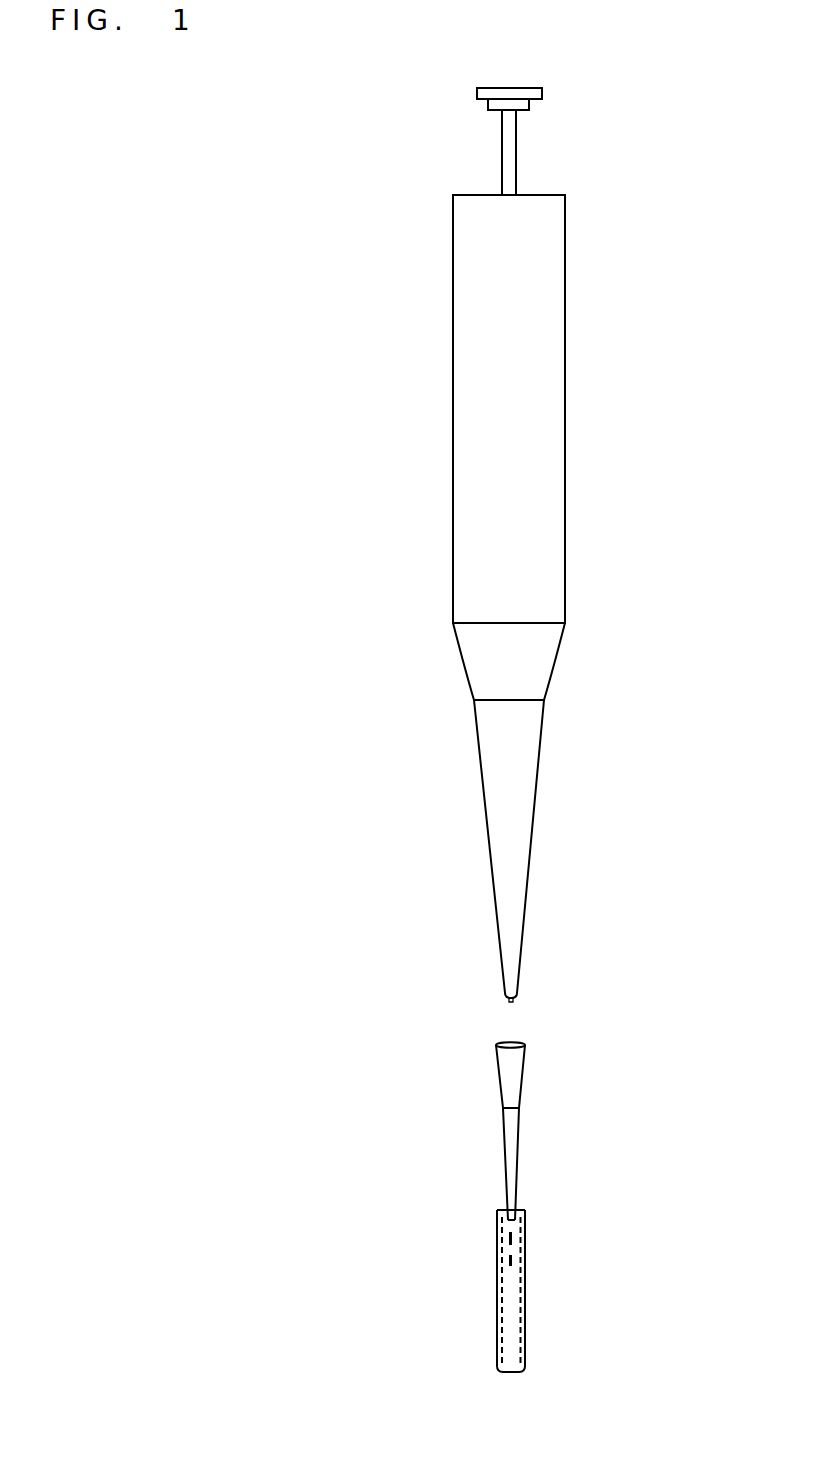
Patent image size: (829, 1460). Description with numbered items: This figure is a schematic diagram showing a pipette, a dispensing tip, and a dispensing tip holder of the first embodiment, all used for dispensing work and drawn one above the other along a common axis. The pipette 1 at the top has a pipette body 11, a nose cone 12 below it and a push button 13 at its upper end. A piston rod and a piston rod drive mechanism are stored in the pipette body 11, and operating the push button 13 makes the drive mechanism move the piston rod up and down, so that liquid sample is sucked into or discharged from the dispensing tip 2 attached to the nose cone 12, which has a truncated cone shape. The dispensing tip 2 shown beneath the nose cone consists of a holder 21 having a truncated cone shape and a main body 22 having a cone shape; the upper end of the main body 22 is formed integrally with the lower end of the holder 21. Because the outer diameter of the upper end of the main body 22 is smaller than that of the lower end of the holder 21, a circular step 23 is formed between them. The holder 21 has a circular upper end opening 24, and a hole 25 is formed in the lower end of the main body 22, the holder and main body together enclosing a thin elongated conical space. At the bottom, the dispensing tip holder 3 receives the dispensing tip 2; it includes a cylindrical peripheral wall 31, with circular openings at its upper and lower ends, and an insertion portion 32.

The pipette 1 is at (638, 80).
The pipette body 11 is at (492, 479).
The nose cone 12 is at (513, 938).
The push button 13 is at (477, 100).
The dispensing tip 2 is at (637, 1038).
The holder 21 is at (497, 1073).
The main body 22 is at (507, 1169).
The circular step 23 is at (503, 1107).
The upper end opening 24 is at (507, 1042).
The hole 25 is at (511, 1268).
The dispensing tip holder 3 is at (433, 1207).
The peripheral wall 31 is at (527, 1331).
The insertion portion 32 is at (518, 1209).